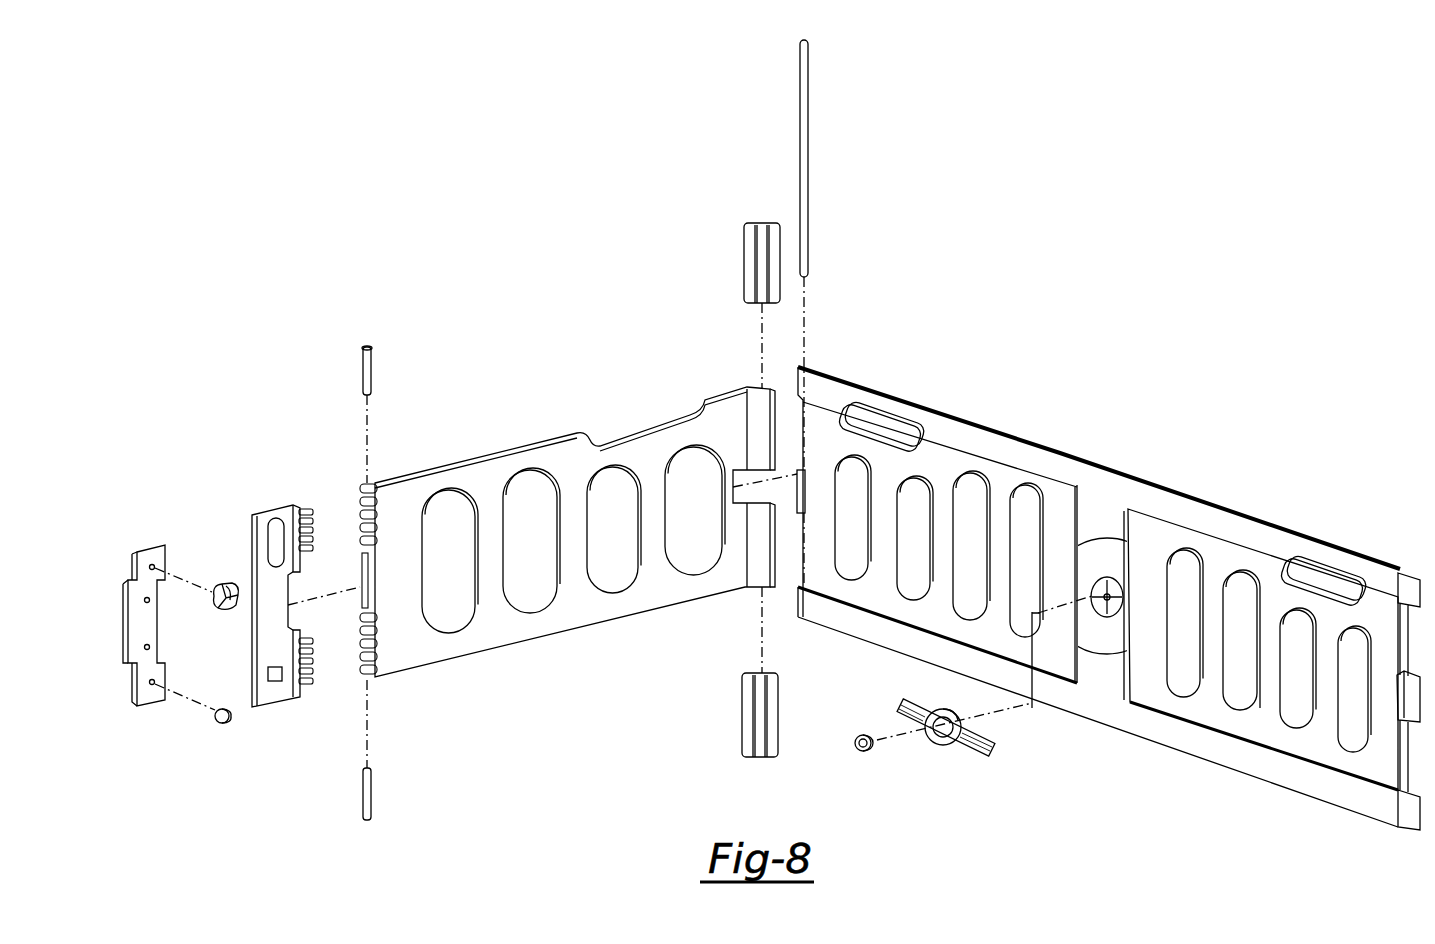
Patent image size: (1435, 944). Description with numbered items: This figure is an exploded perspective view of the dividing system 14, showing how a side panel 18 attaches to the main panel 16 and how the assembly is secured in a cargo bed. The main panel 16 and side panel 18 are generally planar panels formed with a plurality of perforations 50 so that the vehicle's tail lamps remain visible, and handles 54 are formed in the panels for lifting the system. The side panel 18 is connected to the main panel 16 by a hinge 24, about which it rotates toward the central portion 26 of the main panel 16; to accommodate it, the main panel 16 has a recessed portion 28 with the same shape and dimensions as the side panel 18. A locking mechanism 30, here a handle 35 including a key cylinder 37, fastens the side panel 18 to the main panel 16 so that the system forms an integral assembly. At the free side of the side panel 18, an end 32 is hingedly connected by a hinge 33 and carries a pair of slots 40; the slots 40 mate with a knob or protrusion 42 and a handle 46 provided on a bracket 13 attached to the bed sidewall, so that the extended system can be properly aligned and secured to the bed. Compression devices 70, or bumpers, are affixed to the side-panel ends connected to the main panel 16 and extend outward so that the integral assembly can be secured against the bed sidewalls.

The bracket 13 is at (137, 613).
The dividing system 14 is at (1042, 357).
The main panel 16 is at (1105, 483).
The side panel 18 is at (560, 617).
The hinge 24 is at (806, 150).
The central portion 26 is at (1090, 705).
The recessed portion 28 is at (1210, 730).
The locking mechanism 30 is at (917, 755).
The end of side panel 32 is at (277, 599).
The hinge 33 is at (376, 370).
The handle 35 is at (968, 748).
The key cylinder 37 is at (858, 735).
The slots 40 is at (268, 540).
The knob or protrusion 42 is at (219, 723).
The handle 46 is at (216, 608).
The perforations 50 is at (532, 478).
The handles 54 is at (868, 400).
The bumper or compression device 70 is at (754, 225).